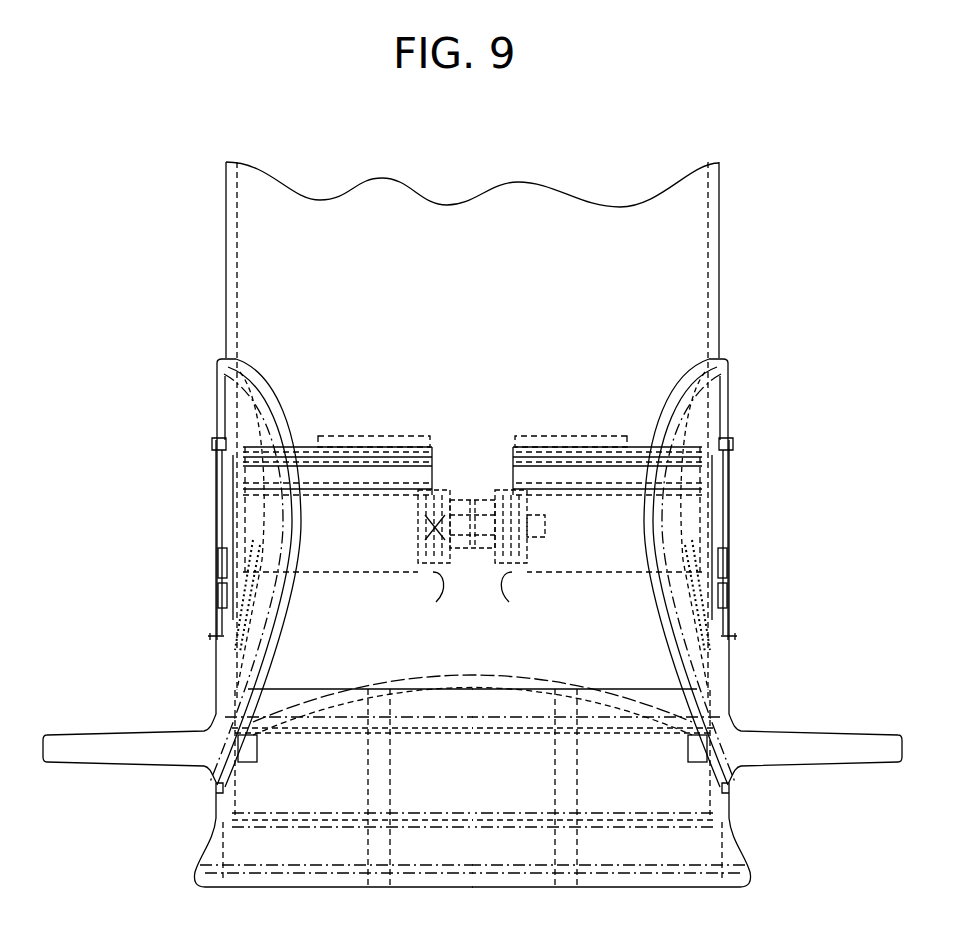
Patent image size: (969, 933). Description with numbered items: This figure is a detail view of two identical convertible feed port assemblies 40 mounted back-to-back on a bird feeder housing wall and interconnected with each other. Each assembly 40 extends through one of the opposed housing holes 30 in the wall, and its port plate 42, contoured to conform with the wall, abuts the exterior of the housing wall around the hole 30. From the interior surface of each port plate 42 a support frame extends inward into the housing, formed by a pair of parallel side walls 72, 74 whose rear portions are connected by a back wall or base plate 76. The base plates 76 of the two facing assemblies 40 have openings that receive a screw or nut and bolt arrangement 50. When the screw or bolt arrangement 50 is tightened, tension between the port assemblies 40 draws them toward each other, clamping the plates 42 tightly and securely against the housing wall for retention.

The housing hole 30 is at (250, 527).
The convertible feed port assembly 40 is at (178, 384).
The port plate 42 is at (256, 394).
The screw or nut/bolt arrangement 50 is at (475, 478).
The parallel side wall 72 is at (385, 556).
The parallel side wall 74 is at (616, 552).
The back wall or base plate 76 is at (474, 607).